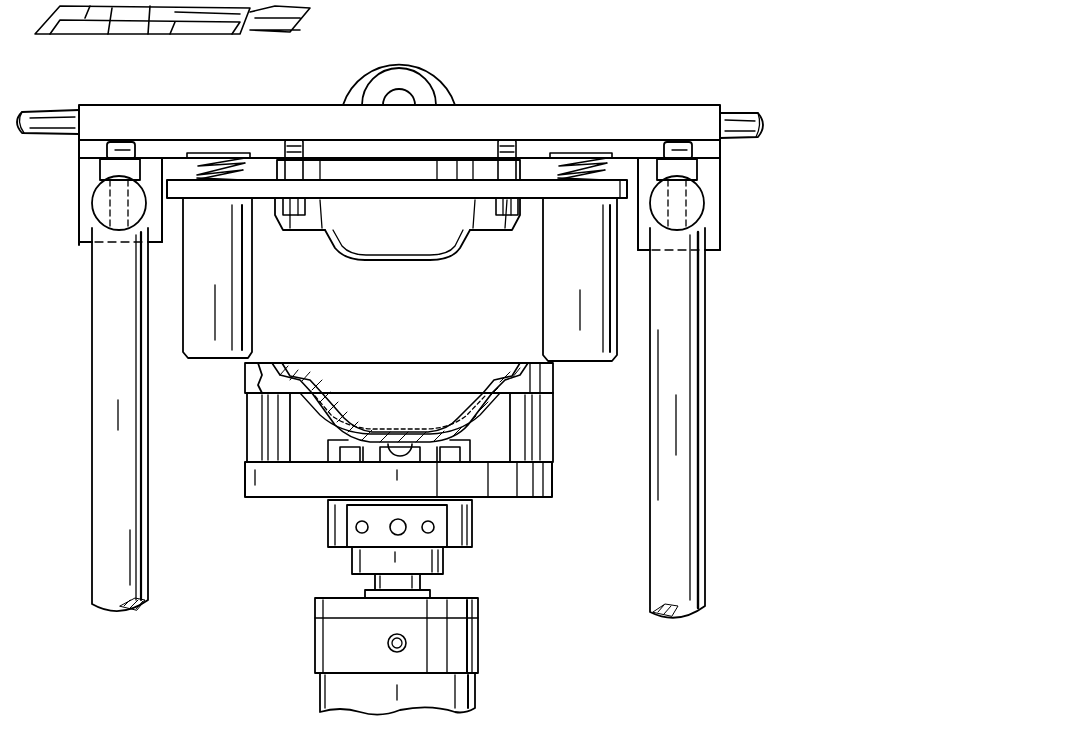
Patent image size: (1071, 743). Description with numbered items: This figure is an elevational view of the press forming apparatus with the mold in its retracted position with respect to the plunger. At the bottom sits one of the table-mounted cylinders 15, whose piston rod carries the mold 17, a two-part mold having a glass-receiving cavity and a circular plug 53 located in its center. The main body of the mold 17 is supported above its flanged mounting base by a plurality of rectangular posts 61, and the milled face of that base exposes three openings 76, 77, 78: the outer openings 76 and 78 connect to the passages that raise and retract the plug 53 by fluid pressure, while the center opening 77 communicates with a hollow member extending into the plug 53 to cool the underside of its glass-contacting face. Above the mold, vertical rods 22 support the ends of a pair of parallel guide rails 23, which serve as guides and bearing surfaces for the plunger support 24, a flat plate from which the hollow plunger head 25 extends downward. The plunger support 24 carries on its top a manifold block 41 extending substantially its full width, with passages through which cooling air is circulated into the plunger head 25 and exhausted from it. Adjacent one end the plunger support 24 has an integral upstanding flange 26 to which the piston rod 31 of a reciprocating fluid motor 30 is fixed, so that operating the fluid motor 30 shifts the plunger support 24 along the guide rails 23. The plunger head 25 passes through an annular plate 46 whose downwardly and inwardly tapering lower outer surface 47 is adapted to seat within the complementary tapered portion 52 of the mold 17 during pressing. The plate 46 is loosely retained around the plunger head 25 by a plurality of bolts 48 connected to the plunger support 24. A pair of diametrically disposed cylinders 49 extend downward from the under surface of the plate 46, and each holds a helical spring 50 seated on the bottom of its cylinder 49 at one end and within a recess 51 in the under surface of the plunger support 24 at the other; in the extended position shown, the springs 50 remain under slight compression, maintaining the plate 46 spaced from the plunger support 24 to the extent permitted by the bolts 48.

The cylinder 15 is at (340, 688).
The mold 17 is at (250, 376).
The vertical rod 22 is at (105, 285).
The guide rail 23 is at (97, 197).
The plunger support 24 is at (85, 142).
The plunger head 25 is at (385, 256).
The upstanding flange 26 is at (390, 72).
The reciprocating fluid motor 30 is at (428, 76).
The piston rod 31 is at (405, 103).
The manifold block 41 is at (652, 120).
The annular plate 46 is at (542, 195).
The tapering lower outer surface 47 is at (489, 222).
The bolt 48 is at (296, 168).
The cylinder 49 is at (238, 300).
The helical spring 50 is at (225, 170).
The recess 51 is at (195, 150).
The tapered portion 52 is at (283, 370).
The circular plug 53 is at (388, 432).
The rectangular post 61 is at (262, 414).
The opening 76 is at (435, 527).
The center opening 77 is at (392, 532).
The opening 78 is at (355, 527).